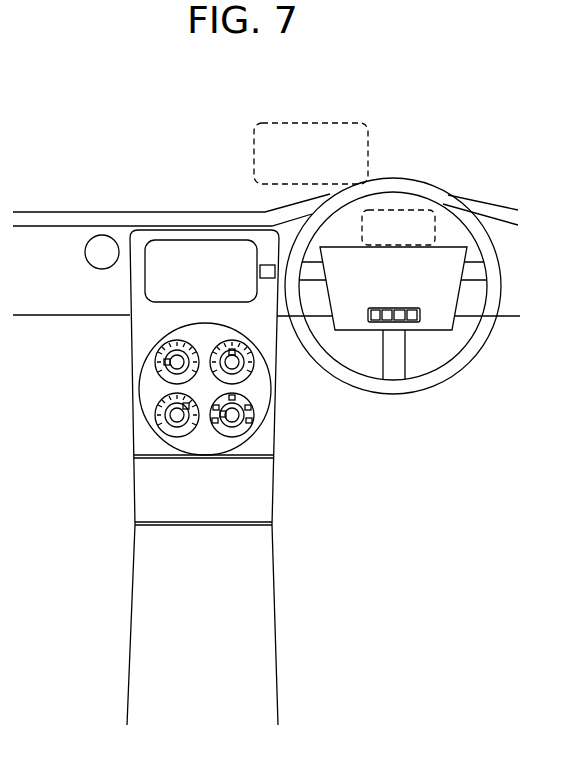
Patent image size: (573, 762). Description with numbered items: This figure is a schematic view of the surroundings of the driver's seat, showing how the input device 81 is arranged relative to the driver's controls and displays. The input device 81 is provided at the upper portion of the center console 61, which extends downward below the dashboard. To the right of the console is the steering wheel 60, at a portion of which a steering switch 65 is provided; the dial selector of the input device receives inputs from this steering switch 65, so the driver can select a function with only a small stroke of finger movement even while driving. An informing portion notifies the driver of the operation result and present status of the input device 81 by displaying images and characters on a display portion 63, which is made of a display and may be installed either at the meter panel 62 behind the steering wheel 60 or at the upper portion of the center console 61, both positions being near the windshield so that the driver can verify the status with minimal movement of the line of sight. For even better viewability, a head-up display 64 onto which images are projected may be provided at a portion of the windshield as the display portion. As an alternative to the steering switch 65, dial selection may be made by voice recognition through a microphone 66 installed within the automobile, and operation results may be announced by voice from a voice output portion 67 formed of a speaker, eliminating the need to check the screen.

The steering wheel 60 is at (365, 383).
The center console 61 is at (143, 332).
The meter panel 62 is at (447, 232).
The display portion 63 is at (165, 255).
The head-up display 64 is at (283, 153).
The steering switch 65 is at (408, 323).
The microphone 66 is at (276, 279).
The voice output portion 67 is at (88, 242).
The input device 81 is at (148, 392).